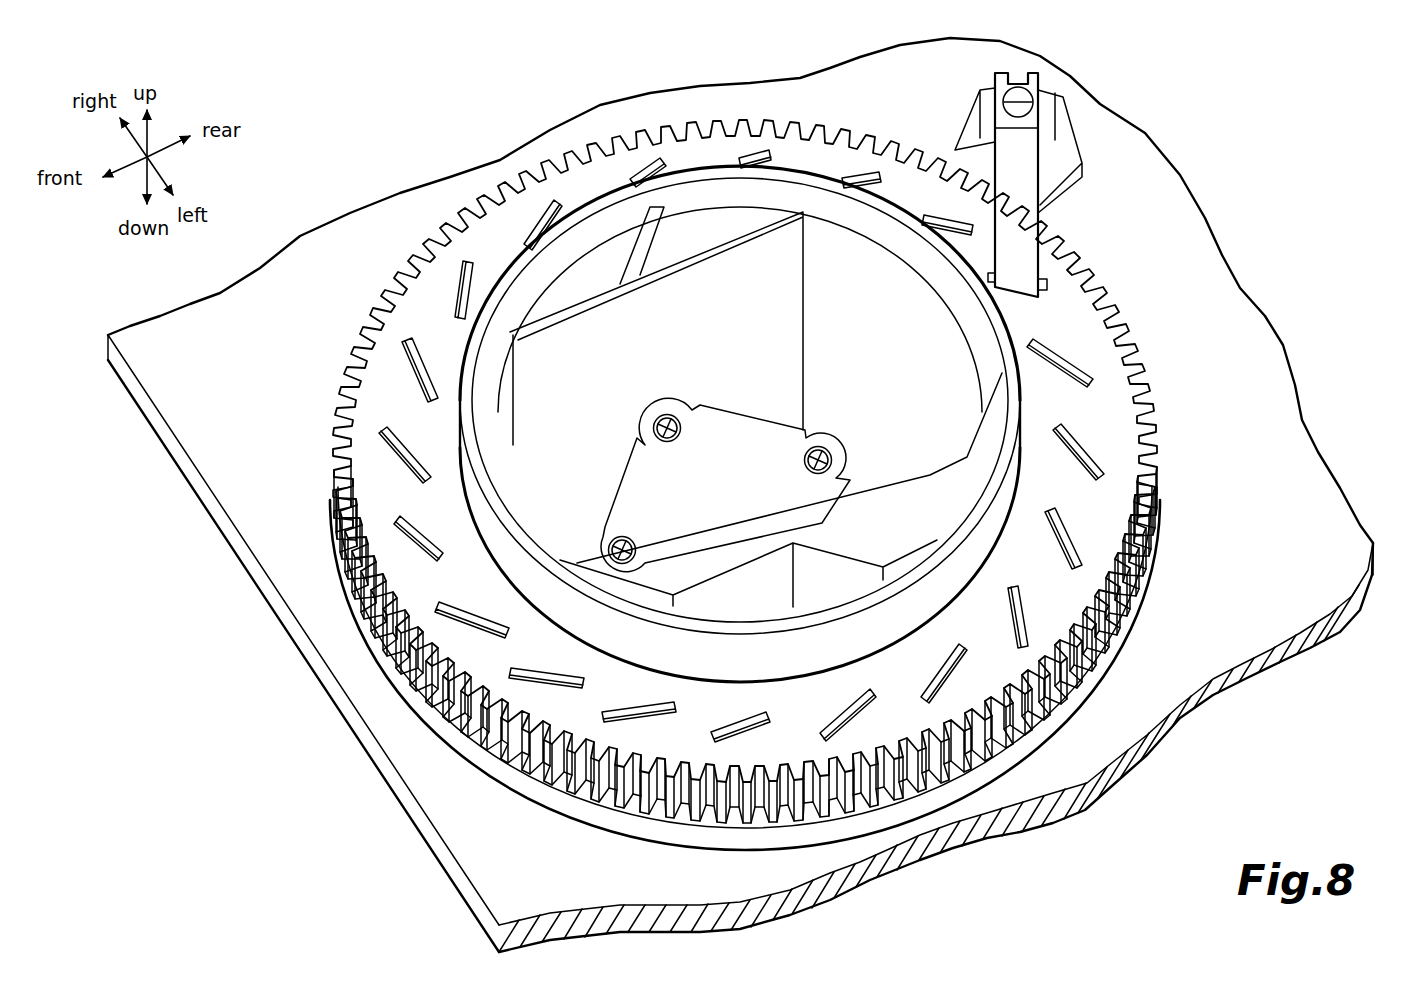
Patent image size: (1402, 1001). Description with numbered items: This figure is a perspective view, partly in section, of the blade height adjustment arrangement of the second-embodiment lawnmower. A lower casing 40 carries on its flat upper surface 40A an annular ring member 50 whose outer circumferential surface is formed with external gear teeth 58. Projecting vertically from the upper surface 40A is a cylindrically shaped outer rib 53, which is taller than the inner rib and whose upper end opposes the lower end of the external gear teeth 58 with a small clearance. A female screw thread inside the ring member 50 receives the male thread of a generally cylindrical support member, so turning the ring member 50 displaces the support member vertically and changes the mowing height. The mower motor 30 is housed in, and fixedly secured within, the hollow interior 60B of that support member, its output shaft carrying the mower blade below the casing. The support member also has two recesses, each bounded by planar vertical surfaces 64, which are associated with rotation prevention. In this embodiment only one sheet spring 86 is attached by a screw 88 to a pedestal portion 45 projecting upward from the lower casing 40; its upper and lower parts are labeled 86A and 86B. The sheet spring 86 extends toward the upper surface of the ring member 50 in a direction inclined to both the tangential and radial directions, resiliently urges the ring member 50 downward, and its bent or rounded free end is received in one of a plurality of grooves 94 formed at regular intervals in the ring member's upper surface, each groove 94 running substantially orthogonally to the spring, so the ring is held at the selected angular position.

The mower motor 30 is at (733, 423).
The lower casing 40 is at (1240, 323).
The upper surface of the lower casing 40A is at (1297, 470).
The pedestal portion 45 is at (1072, 152).
The annular ring member 50 is at (1092, 502).
The outer rib 53 is at (900, 793).
The external gear teeth 58 is at (1073, 677).
The hollow interior of the support member 60B is at (712, 277).
The vertical surfaces 64 is at (628, 244).
The sheet spring 86 is at (1073, 170).
The sensor upper portion 86A is at (1032, 120).
The sensor lower portion 86B is at (1015, 285).
The screw 88 is at (1020, 92).
The grooves 94 is at (1040, 290).